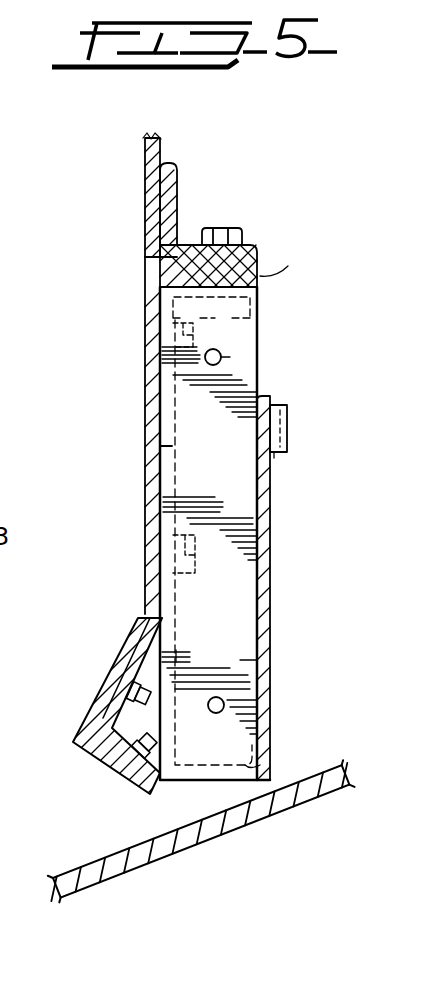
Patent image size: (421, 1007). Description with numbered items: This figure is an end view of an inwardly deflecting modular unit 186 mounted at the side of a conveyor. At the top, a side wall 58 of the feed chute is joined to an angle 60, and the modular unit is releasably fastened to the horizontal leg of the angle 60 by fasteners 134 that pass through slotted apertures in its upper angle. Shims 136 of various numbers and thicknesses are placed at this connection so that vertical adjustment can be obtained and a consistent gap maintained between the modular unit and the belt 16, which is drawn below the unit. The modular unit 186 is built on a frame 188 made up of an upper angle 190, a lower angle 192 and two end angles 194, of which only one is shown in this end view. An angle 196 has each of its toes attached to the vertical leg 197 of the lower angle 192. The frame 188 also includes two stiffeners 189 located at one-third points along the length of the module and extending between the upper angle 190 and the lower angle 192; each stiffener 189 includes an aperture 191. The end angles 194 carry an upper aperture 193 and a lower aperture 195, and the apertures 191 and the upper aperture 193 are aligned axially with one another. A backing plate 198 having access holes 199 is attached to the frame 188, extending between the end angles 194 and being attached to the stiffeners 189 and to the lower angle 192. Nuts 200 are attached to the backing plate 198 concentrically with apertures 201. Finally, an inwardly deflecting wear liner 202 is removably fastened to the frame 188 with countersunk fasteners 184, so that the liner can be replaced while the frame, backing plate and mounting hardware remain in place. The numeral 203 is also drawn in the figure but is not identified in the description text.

The belt 16 is at (206, 843).
The side wall 58 is at (146, 173).
The angle 60 is at (177, 192).
The fastener 134 is at (222, 230).
The shim 136 is at (270, 265).
The countersunk fastener 184 is at (144, 337).
The inwardly deflecting modular unit 186 is at (345, 324).
The frame 188 is at (278, 376).
The stiffener 189 is at (145, 446).
The upper angle 190 is at (262, 302).
The aperture 191 is at (224, 356).
The lower angle 192 is at (272, 748).
The upper aperture 193 is at (222, 351).
The end angle 194 is at (245, 661).
The lower aperture 195 is at (226, 704).
The angle 196 is at (96, 710).
The vertical leg 197 is at (176, 650).
The backing plate 198 is at (281, 549).
The access hole 199 is at (270, 617).
The nut 200 is at (288, 410).
The aperture 201 is at (274, 458).
The inwardly deflecting wear liner 202 is at (145, 397).
The mounting plate 203 is at (116, 667).